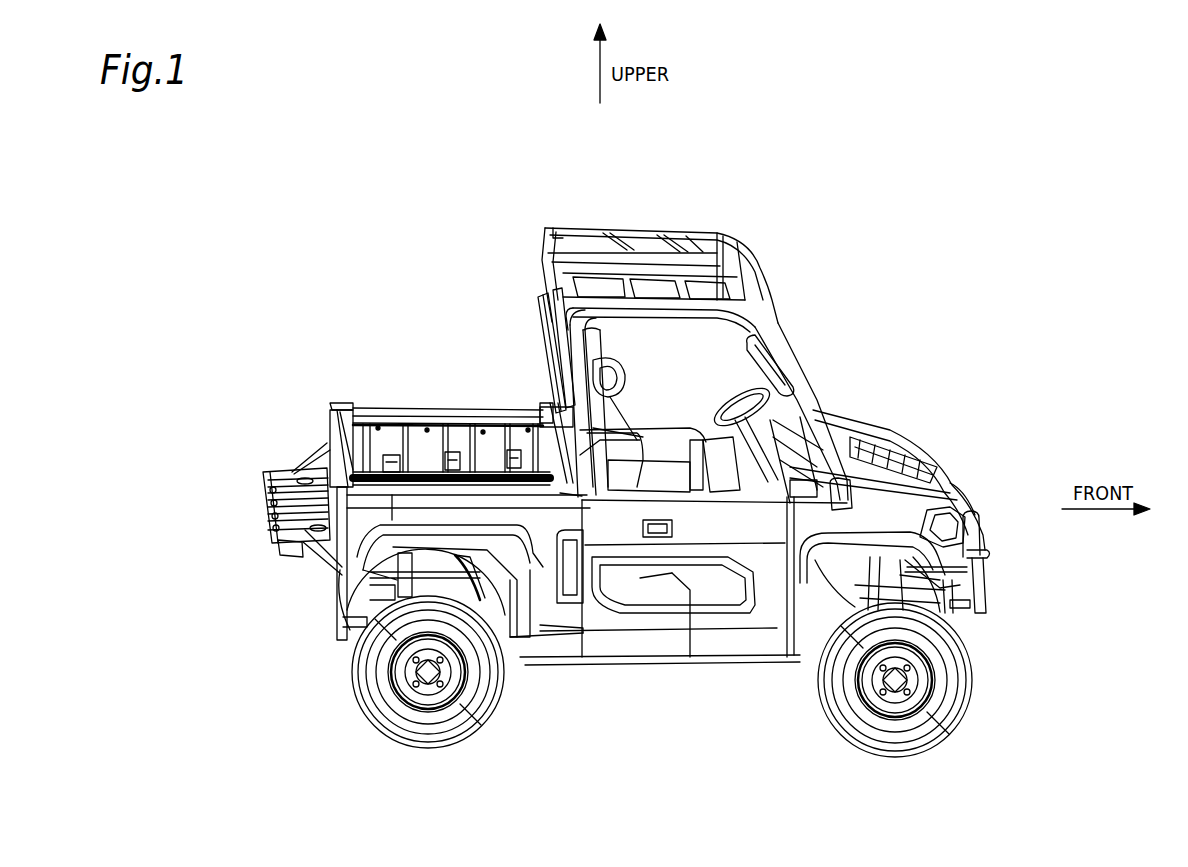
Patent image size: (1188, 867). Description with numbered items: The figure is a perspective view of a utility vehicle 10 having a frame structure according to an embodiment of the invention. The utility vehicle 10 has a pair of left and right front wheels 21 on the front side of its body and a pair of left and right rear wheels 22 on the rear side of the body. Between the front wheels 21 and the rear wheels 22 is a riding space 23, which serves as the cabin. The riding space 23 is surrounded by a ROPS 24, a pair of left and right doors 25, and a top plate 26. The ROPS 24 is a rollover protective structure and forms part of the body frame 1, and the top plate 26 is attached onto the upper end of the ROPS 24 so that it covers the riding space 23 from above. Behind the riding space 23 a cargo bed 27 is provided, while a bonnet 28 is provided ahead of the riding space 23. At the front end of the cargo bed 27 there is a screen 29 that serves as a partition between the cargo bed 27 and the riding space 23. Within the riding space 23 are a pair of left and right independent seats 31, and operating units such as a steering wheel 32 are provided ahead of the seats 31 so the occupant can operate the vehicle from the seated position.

The utility vehicle 10 is at (899, 220).
The body frame 1 is at (812, 334).
The front wheels 21 is at (925, 745).
The rear wheels 22 is at (457, 742).
The riding space 23 is at (639, 345).
The ROPS 24 is at (782, 332).
The doors 25 is at (720, 583).
The top plate 26 is at (660, 265).
The cargo bed 27 is at (421, 440).
The bonnet 28 is at (885, 433).
The screen 29 is at (540, 325).
The seats 31 is at (658, 480).
The steering wheel 32 is at (724, 415).